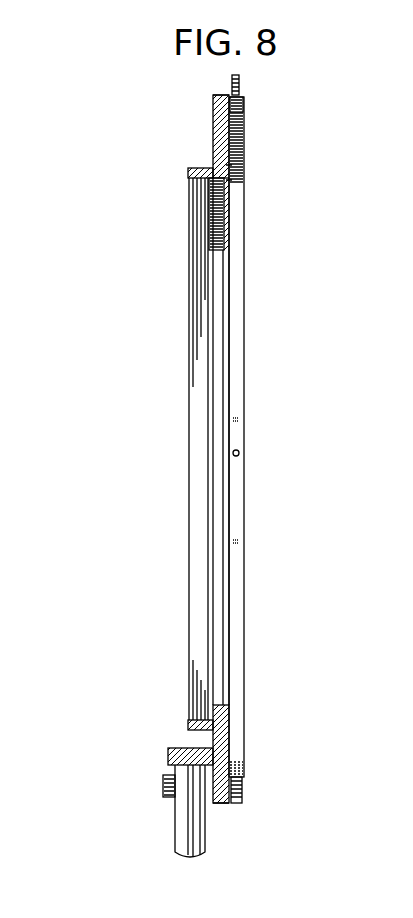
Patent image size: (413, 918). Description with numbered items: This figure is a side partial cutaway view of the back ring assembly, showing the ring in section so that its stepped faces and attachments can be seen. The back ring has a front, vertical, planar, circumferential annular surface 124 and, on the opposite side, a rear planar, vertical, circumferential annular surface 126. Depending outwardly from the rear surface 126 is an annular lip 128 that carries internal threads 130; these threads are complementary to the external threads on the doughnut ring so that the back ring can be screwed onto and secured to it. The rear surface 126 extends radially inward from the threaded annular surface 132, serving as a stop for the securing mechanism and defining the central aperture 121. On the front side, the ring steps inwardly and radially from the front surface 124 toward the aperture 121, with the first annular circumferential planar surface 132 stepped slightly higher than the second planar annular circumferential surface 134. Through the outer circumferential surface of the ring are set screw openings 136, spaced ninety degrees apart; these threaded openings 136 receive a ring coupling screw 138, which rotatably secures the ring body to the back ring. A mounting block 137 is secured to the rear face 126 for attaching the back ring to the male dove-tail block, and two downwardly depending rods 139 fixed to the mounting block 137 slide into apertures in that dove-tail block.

The aperture 121 is at (222, 210).
The front vertical planar circumferential annular surface 124 is at (244, 106).
The rear planar vertical circumferential annular surface 126 is at (213, 124).
The annular lip 128 is at (190, 169).
The internal threads 130 is at (207, 183).
The threaded annular surface 132 is at (244, 149).
The second planar annular circumferential surface 134 is at (229, 172).
The set screw openings 136 is at (230, 97).
The mounting block 137 is at (168, 760).
The ring coupling screw 138 is at (240, 82).
The downwardly depending rods 139 is at (182, 832).